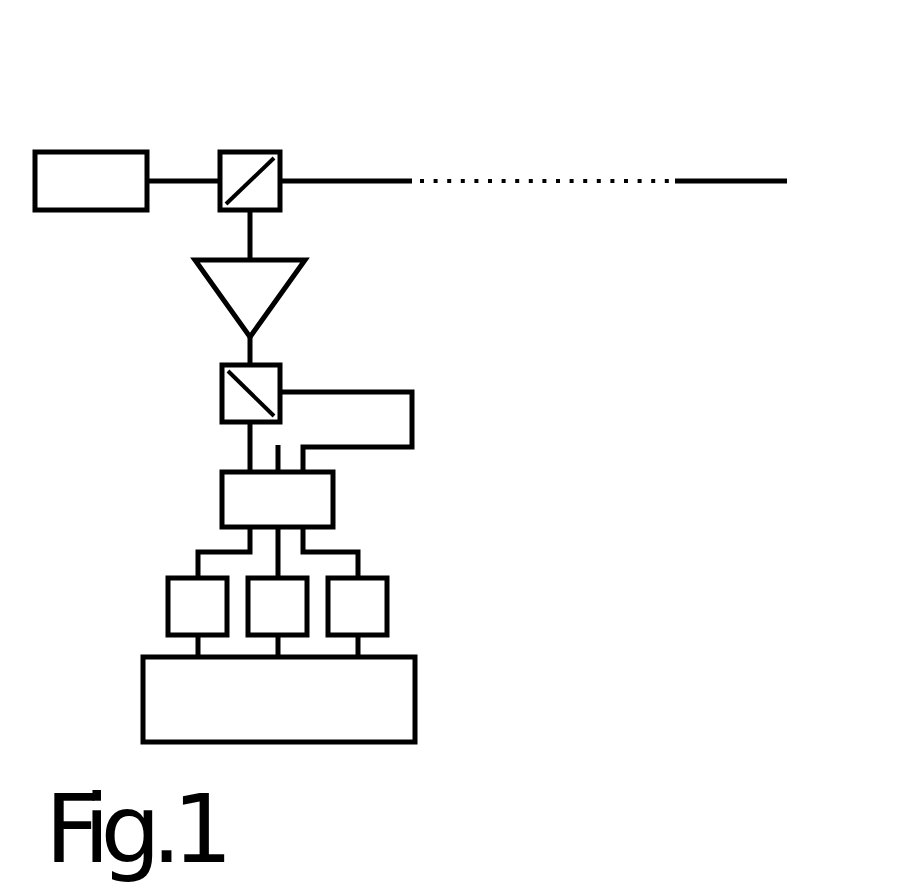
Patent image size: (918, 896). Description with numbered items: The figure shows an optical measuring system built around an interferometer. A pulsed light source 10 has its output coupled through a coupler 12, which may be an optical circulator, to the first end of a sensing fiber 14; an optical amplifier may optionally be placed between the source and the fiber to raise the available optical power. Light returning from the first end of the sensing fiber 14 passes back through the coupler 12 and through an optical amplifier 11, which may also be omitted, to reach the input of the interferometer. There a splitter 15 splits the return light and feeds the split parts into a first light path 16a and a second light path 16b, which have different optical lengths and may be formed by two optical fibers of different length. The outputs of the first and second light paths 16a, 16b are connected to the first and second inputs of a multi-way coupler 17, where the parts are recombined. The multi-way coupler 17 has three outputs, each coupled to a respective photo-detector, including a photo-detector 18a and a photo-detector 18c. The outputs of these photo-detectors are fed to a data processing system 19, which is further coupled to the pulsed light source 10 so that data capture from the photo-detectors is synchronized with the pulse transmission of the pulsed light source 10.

The pulsed light source 10 is at (97, 152).
The coupler 12 is at (238, 152).
The sensing fiber 14 is at (360, 179).
The optical amplifier 11 is at (225, 315).
The splitter 15 is at (222, 400).
The first light path 16a is at (248, 441).
The second light path 16b is at (413, 411).
The multi-way coupler 17 is at (222, 504).
The photo-detector 18a is at (168, 607).
The photo-detector 18c is at (387, 612).
The data processing system 19 is at (143, 700).